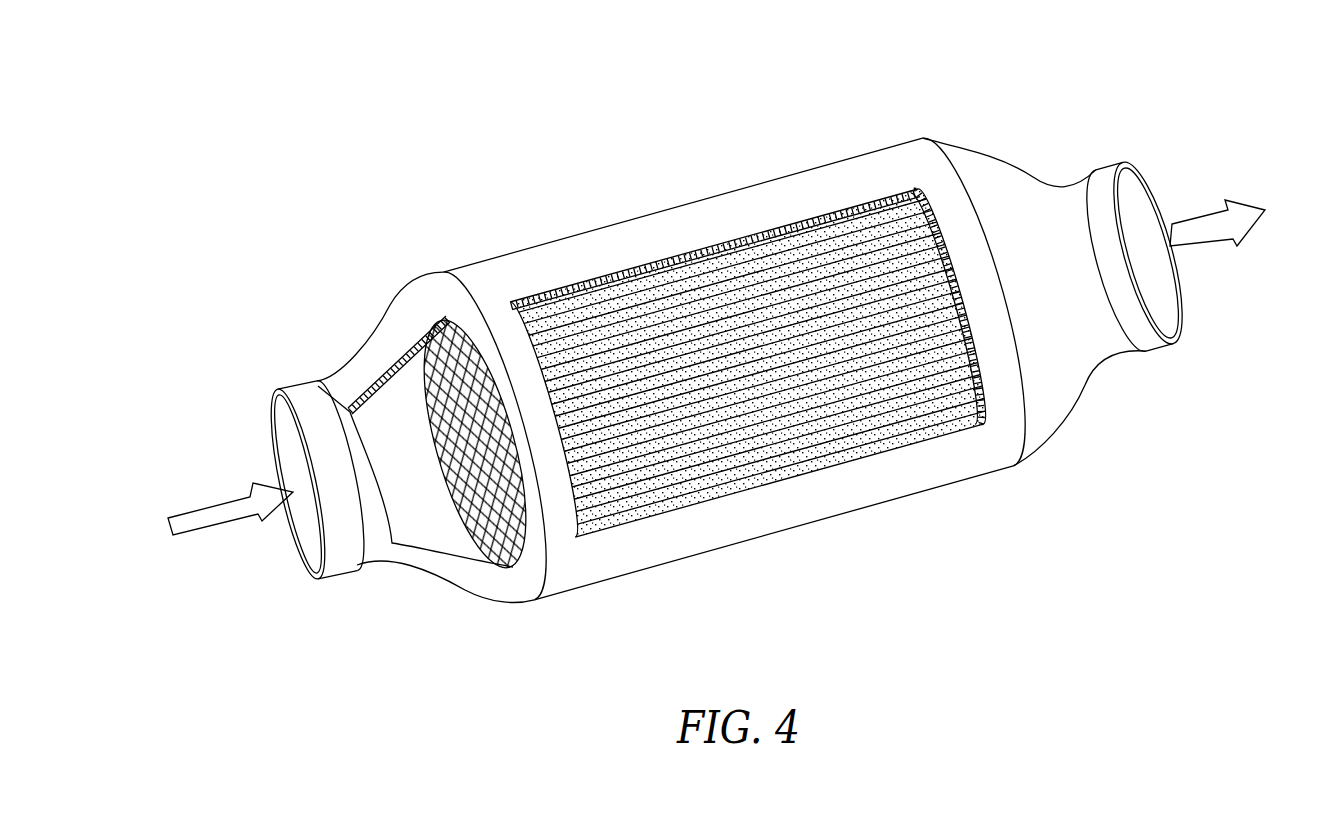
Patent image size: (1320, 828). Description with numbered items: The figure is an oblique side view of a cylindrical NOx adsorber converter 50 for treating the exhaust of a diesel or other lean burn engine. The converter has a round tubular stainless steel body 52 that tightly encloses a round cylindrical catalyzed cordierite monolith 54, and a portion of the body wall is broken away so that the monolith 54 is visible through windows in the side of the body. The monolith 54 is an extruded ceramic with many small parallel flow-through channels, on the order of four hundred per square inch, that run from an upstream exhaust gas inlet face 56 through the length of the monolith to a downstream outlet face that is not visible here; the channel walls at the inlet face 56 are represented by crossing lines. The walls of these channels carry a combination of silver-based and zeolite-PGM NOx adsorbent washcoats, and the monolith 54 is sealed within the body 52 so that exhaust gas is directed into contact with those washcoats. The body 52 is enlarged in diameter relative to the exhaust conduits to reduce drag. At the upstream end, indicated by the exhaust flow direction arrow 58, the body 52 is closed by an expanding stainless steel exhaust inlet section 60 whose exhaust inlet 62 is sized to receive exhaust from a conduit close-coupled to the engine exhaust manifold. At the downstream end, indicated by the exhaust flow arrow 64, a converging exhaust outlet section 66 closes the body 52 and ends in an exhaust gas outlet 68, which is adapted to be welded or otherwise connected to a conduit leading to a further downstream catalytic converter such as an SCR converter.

The washcoated monolithic NOx adsorber 50 is at (498, 180).
The tubular stainless steel body 52 is at (695, 200).
The catalyzed cordierite monolith 54 is at (847, 233).
The exhaust gas inlet face 56 is at (430, 440).
The exhaust flow direction arrow 58 is at (203, 505).
The exhaust inlet section 60 is at (407, 332).
The exhaust inlet 62 is at (272, 425).
The exhaust flow arrow 64 is at (1185, 243).
The exhaust outlet section 66 is at (993, 178).
The exhaust gas outlet 68 is at (1160, 217).